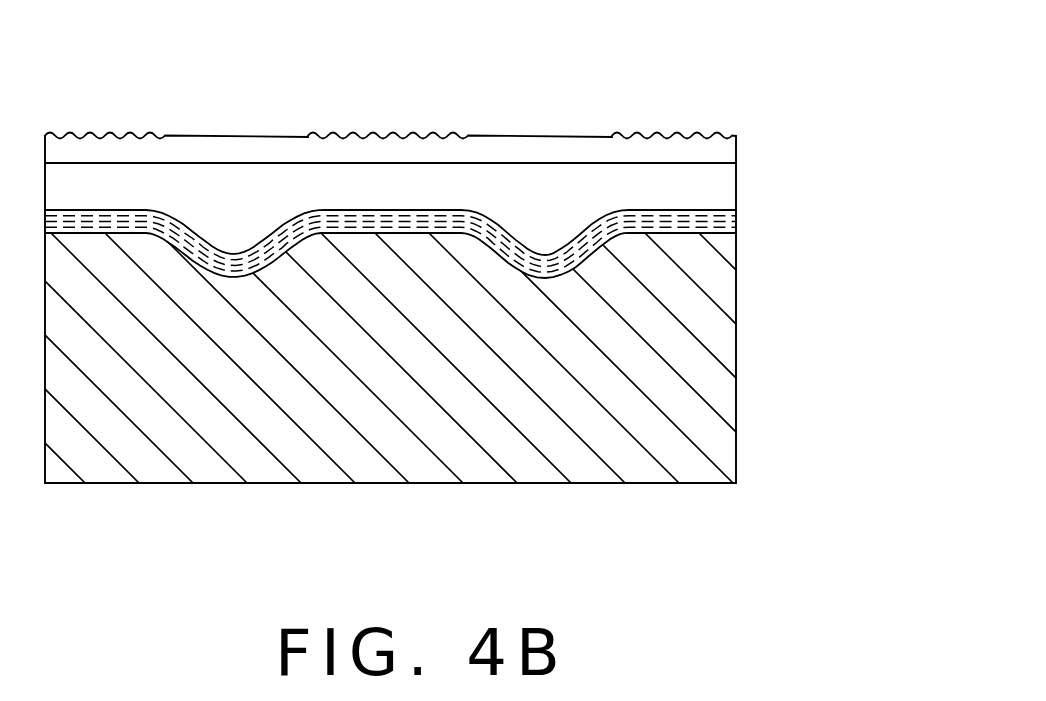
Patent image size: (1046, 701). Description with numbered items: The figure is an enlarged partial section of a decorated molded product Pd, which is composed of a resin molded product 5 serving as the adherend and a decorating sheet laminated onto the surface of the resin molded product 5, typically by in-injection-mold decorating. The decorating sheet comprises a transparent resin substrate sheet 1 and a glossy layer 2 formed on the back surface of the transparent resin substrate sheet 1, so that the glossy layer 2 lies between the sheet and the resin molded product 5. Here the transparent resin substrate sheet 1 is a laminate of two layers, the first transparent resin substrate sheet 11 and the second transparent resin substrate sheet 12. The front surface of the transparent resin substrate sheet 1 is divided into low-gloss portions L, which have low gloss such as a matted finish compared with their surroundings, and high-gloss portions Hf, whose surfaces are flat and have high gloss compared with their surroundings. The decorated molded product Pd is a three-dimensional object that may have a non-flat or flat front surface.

The transparent resin substrate sheet 1 is at (840, 135).
The first transparent resin substrate sheet 11 is at (736, 153).
The second transparent resin substrate sheet 12 is at (736, 187).
The glossy layer 2 is at (736, 227).
The resin molded product 5 is at (720, 388).
The high-gloss portion Hf is at (555, 137).
The low-gloss portion L is at (668, 137).
The decorated molded product Pd is at (752, 130).